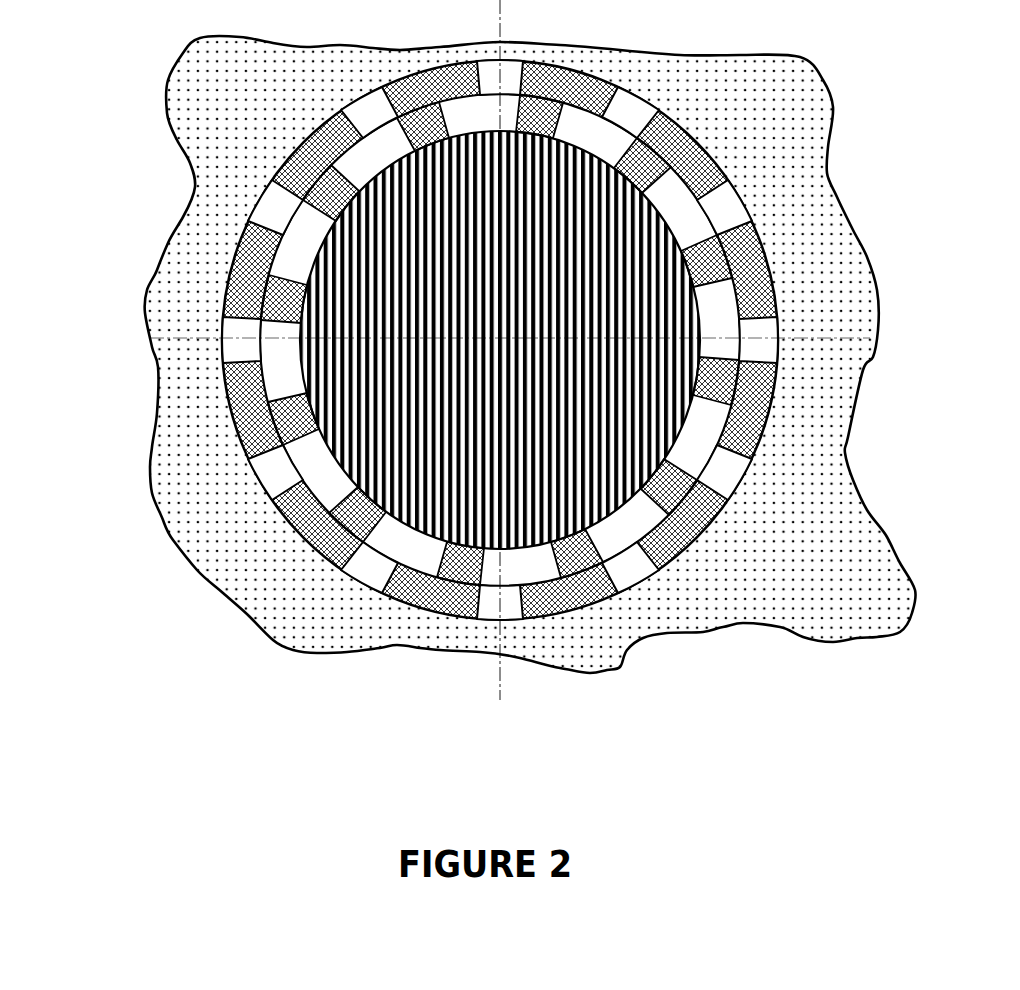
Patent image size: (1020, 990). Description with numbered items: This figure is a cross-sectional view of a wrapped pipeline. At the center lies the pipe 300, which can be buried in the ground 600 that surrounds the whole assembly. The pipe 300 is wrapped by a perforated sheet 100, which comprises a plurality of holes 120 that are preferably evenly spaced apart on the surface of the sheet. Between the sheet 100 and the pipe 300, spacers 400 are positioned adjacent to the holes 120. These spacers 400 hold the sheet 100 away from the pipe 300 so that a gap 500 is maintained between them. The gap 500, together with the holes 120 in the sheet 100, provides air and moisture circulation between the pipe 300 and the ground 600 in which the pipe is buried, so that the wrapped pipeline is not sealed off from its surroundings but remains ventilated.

The perforated sheet 100 is at (245, 268).
The holes 120 is at (638, 568).
The pipeline 300 is at (663, 255).
The spacers 400 is at (280, 305).
The gap 500 is at (393, 543).
The ground 600 is at (237, 133).